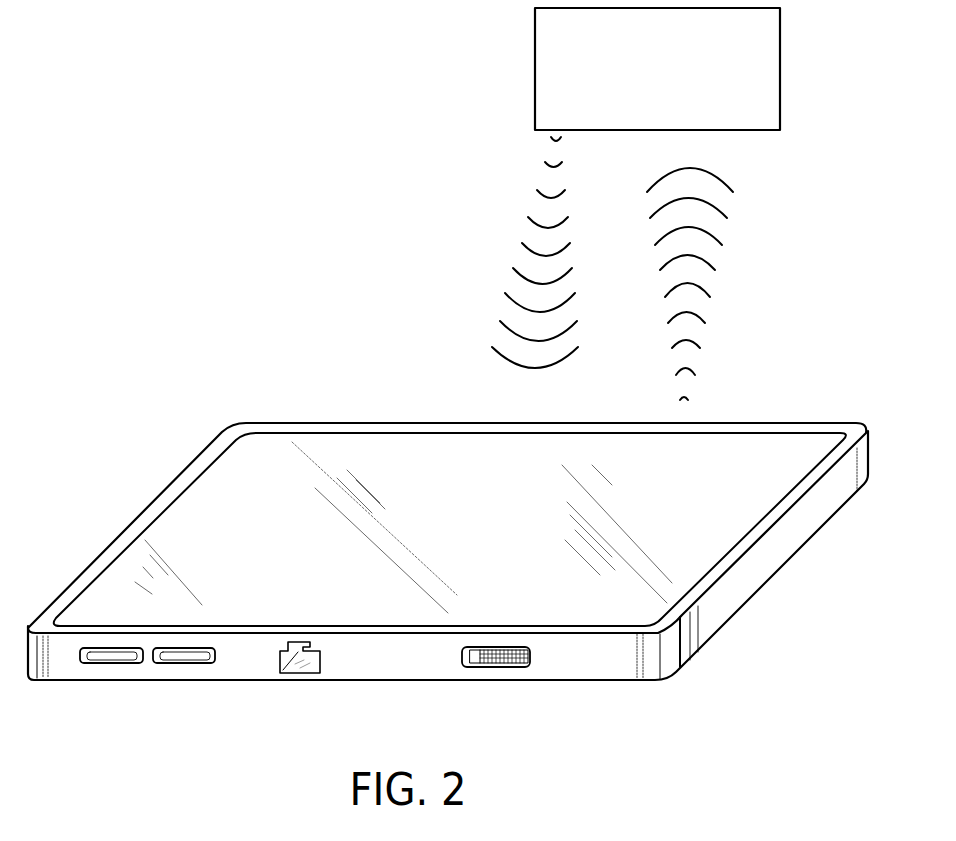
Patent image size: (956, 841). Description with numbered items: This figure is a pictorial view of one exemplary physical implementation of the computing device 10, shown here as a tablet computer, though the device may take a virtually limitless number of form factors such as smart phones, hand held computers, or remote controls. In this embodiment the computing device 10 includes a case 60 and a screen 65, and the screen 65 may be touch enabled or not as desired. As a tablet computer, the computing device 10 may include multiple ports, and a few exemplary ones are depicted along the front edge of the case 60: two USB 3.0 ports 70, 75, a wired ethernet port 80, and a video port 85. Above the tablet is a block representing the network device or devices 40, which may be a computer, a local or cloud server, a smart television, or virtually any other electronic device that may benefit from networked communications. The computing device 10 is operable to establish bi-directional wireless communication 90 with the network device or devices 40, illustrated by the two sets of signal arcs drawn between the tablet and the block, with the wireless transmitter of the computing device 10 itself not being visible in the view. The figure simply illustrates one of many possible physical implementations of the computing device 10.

The computing device 10 is at (98, 462).
The network device(s) 40 is at (558, 52).
The case 60 is at (150, 506).
The screen 65 is at (227, 483).
The USB 3.0 port 70 is at (107, 665).
The USB 3.0 port 75 is at (175, 665).
The wired ethernet port 80 is at (273, 663).
The video port 85 is at (537, 670).
The bi-directional wireless communication 90 is at (733, 263).